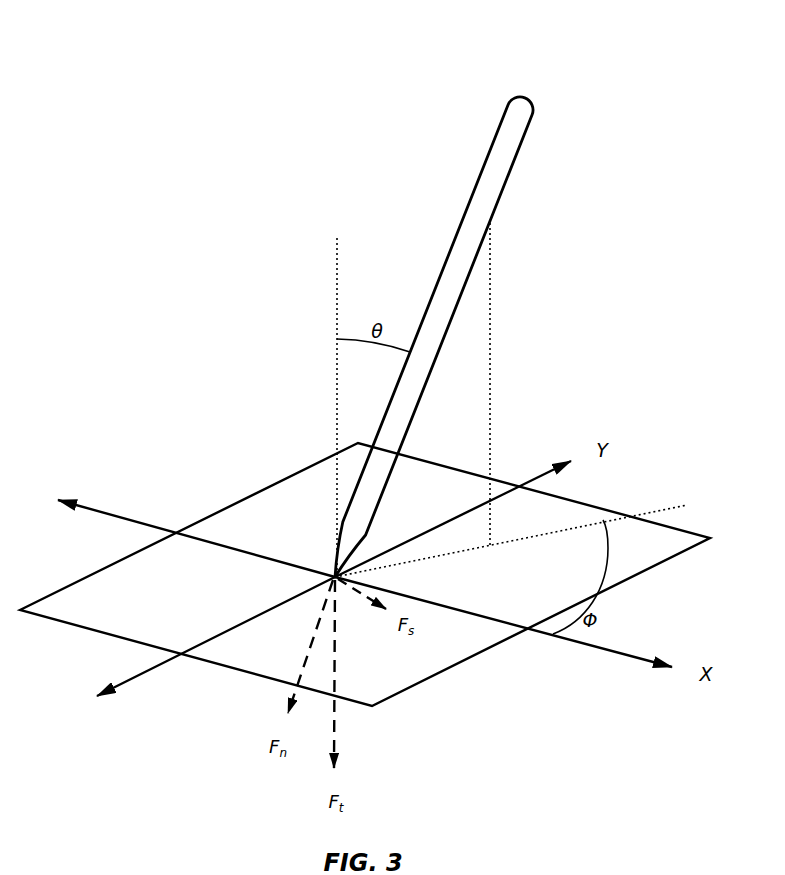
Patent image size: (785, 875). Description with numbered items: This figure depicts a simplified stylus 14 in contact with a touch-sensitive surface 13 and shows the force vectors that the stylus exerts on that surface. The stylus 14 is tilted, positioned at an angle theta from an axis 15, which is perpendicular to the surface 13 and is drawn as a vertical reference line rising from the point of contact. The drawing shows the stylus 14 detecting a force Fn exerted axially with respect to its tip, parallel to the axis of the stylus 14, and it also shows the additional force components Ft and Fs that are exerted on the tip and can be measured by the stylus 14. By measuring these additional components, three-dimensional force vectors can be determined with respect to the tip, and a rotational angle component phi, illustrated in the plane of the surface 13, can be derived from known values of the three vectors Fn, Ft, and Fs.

The touch-sensitive surface 13 is at (79, 604).
The stylus 14 is at (518, 100).
The axis 15 is at (337, 283).